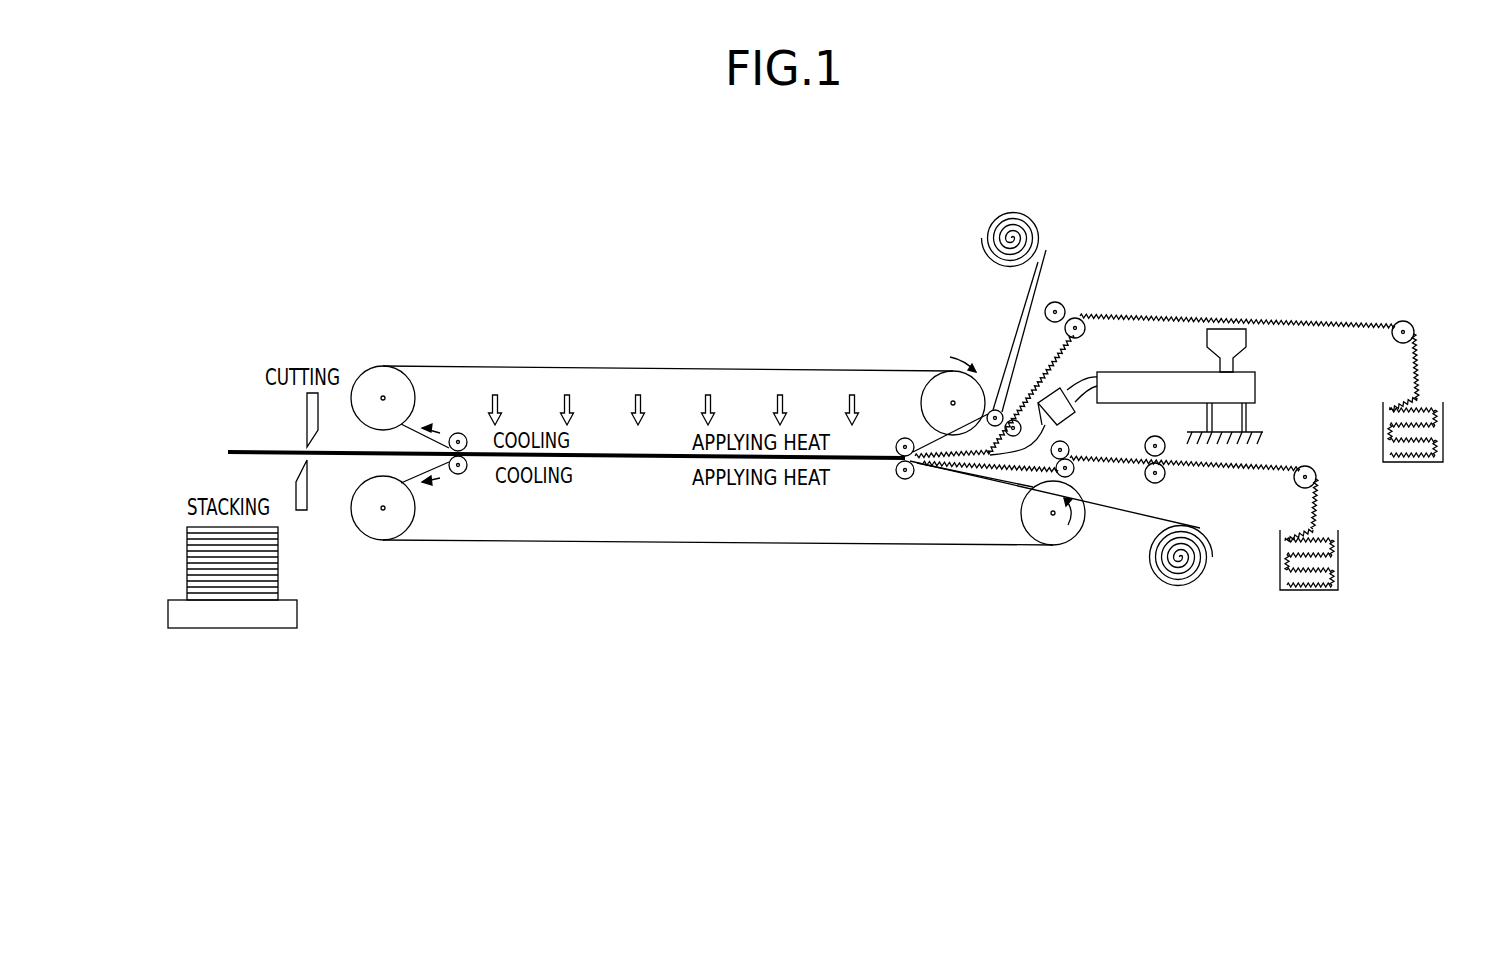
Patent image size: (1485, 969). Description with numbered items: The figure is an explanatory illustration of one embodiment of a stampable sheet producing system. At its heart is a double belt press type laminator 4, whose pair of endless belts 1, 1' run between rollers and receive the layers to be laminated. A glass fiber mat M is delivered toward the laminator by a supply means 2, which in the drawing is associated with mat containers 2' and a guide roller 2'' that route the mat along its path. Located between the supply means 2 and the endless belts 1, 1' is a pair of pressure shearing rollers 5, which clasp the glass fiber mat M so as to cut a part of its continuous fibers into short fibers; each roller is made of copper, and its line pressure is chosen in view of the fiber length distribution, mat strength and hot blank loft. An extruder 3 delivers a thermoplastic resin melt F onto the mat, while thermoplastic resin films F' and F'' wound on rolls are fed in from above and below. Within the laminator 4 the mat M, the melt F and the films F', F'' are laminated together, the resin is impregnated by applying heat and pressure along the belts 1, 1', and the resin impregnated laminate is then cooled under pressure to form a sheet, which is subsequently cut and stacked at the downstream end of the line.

The endless belt 1 is at (718, 541).
The endless belt 1' is at (669, 371).
The supply means 2 is at (1113, 339).
The reinforcing mesh supply box 2' is at (1361, 531).
The mesh guide roller 2'' is at (1429, 323).
The extruder 3 is at (1130, 372).
The double belt press type laminator 4 is at (560, 407).
The pressure shearing rollers 5 is at (1003, 413).
The thermoplastic resin melt F is at (1049, 437).
The thermoplastic resin film F' is at (1004, 202).
The thermoplastic resin film F'' is at (1063, 563).
The glass fiber mat M is at (1233, 316).